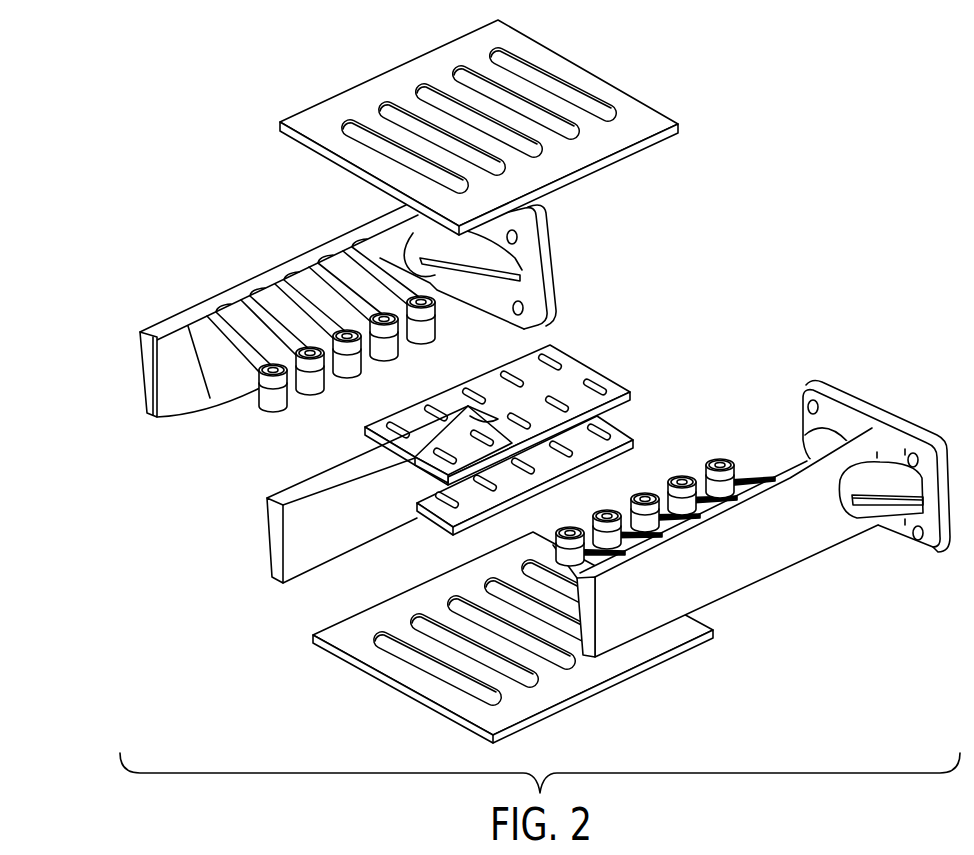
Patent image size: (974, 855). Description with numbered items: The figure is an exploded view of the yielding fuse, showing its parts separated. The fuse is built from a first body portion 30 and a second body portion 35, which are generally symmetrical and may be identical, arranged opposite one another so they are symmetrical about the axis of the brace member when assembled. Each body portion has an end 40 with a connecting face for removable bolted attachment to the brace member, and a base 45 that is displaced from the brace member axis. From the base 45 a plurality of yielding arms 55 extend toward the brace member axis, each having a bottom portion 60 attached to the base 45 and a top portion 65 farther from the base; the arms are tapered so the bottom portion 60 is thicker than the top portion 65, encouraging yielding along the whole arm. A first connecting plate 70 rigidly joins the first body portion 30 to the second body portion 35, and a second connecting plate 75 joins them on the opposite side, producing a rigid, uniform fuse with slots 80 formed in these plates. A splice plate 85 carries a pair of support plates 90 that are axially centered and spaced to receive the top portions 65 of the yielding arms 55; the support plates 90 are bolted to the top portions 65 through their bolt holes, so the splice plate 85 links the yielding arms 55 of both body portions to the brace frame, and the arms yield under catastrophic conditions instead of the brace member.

The first body portion 30 is at (261, 336).
The second body portion 35 is at (848, 547).
The end 40 is at (545, 257).
The base 45 is at (140, 339).
The yielding arms 55 is at (328, 266).
The bottom portion 60 is at (224, 389).
The top portion 65 is at (273, 408).
The first connecting plate 70 is at (497, 127).
The second connecting plate 75 is at (588, 702).
The slots 80 is at (537, 74).
The splice plate 85 is at (266, 552).
The support plates 90 is at (600, 366).